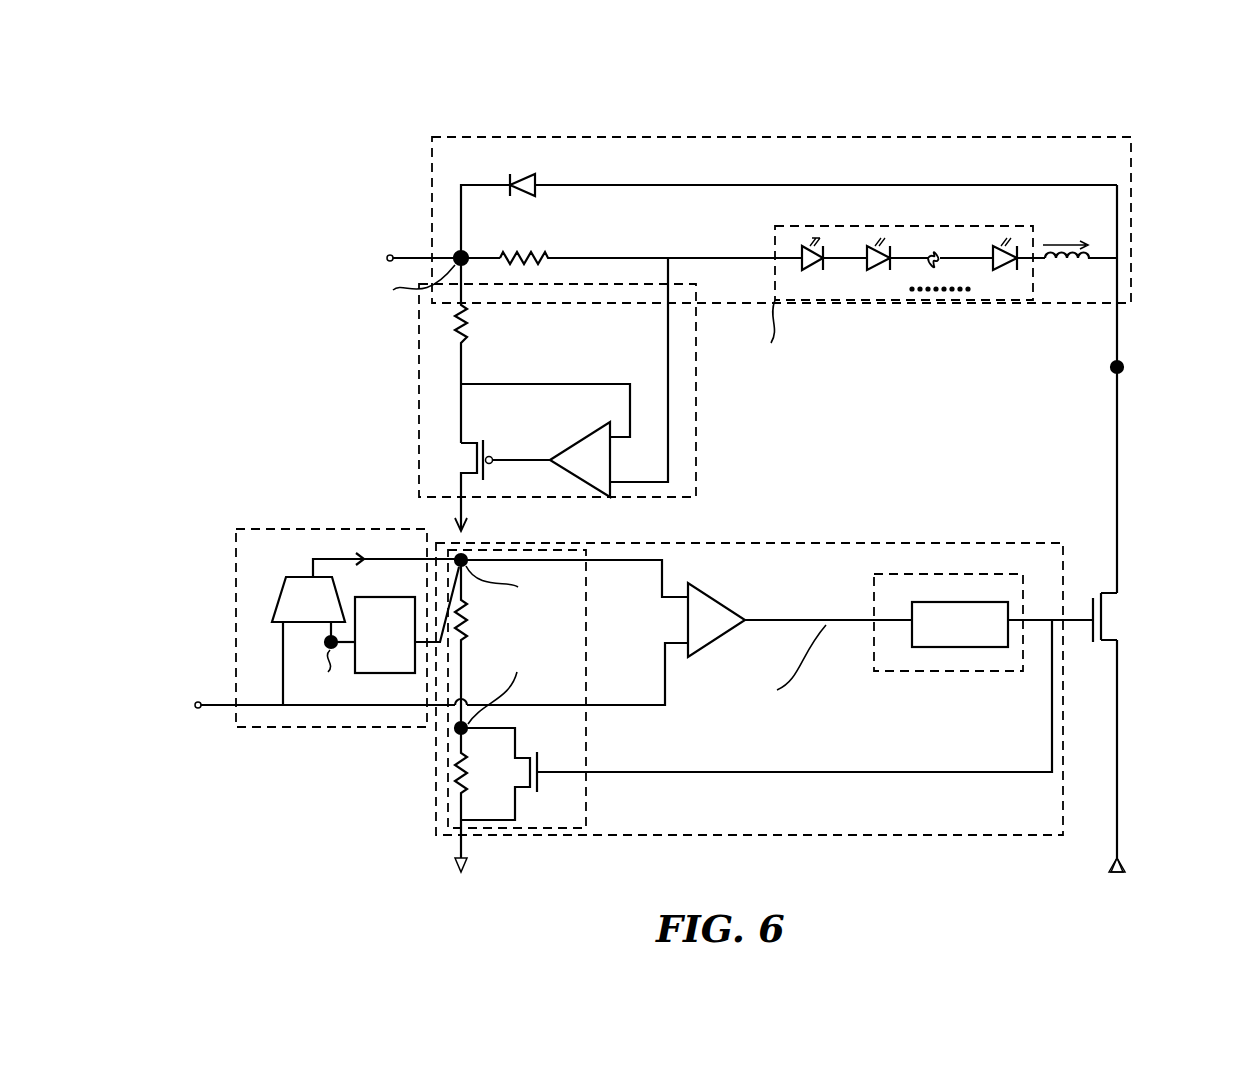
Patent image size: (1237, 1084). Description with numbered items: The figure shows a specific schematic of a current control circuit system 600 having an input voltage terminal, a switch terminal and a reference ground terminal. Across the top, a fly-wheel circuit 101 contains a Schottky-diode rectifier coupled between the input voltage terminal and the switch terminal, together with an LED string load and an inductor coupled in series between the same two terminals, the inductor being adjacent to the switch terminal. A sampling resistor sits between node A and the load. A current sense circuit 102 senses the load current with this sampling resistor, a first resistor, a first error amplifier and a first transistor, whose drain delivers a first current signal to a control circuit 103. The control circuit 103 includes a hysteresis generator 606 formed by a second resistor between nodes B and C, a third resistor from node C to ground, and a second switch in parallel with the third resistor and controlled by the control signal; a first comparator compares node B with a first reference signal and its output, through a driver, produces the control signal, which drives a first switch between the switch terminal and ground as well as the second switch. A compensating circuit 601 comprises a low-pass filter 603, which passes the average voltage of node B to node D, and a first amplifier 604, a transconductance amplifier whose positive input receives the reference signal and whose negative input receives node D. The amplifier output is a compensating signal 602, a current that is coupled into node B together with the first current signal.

The circuit system 600 is at (1146, 116).
The fly-wheel circuit 101 is at (432, 168).
The current sense circuit 102 is at (419, 392).
The control circuit 103 is at (937, 543).
The compensating circuit 601 is at (258, 527).
The compensating signal 602 is at (405, 558).
The low-pass filter 603 is at (380, 673).
The first amplifier 604 is at (308, 612).
The hysteresis generator 606 is at (587, 735).